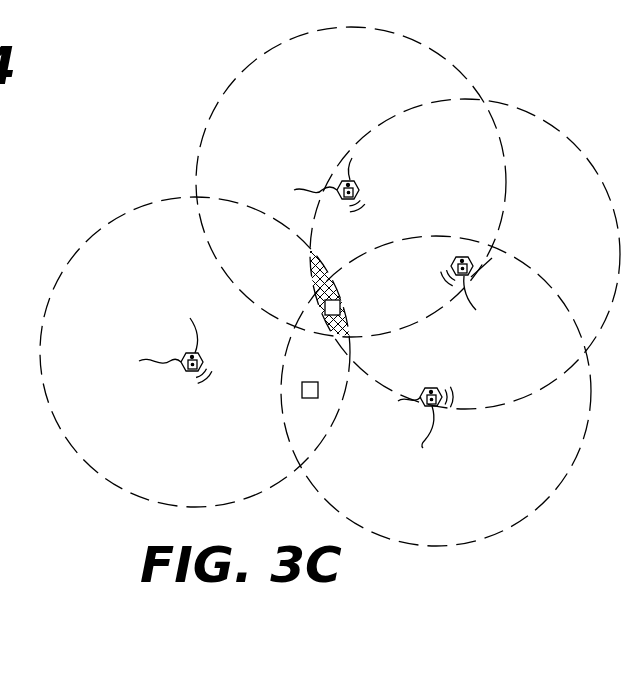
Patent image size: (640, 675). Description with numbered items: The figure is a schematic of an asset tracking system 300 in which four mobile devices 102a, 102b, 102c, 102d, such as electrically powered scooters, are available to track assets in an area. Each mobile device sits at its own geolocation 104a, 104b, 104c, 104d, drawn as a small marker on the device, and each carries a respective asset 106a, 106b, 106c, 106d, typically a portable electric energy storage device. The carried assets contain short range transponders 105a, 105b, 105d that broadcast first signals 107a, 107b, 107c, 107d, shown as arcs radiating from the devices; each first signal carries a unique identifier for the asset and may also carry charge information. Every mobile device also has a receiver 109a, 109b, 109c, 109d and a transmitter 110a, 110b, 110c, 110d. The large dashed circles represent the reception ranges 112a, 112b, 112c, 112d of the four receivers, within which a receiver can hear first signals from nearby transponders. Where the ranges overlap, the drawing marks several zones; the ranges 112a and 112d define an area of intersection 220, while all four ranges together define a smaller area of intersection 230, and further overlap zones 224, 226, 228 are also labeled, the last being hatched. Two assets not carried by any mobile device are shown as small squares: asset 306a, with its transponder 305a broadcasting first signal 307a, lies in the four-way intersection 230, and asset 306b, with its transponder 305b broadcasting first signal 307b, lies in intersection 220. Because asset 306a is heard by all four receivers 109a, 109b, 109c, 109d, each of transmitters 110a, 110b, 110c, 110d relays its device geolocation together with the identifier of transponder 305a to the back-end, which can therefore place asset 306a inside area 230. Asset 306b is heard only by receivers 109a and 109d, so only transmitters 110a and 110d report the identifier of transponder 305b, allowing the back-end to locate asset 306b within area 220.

The sensor network system 300 is at (160, 58).
The reception range of receiver 109a 112a is at (542, 505).
The reception range of receiver 109b 112b is at (600, 177).
The reception range of receiver 109c 112c is at (484, 102).
The reception range of receiver 109d 112d is at (80, 458).
The mobile device 102a is at (425, 389).
The mobile device 102b is at (456, 258).
The mobile device 102c is at (338, 182).
The mobile device 102d is at (182, 355).
The geolocation 104a is at (438, 389).
The geolocation 104b is at (468, 257).
The geolocation 104c is at (355, 180).
The geolocation 104d is at (198, 350).
The short range transponder 105a is at (360, 189).
The short range transponder 105b is at (475, 268).
The sensor 105d is at (204, 362).
The asset 106a is at (440, 405).
The asset 106b is at (471, 277).
The asset 106c is at (342, 199).
The asset 106d is at (185, 371).
The first signal 107a is at (455, 397).
The first signal 107b is at (446, 304).
The wireless signal 107c is at (368, 210).
The wireless signal 107d is at (203, 388).
The receiver 109a is at (384, 404).
The receiver 109b is at (509, 263).
The receiver 109c is at (291, 192).
The receiver 109d is at (135, 360).
The transmitter 110a is at (422, 441).
The transmitter 110b is at (497, 302).
The transmitter 110c is at (372, 138).
The transmitter 110d is at (203, 321).
The area of intersection 220 is at (332, 371).
The region 224 is at (485, 150).
The region 226 is at (263, 255).
The overlap region 228 is at (330, 262).
The area of intersection 230 is at (342, 327).
The short range transponder 305a is at (402, 258).
The asset 306a is at (340, 297).
The first signal 307a is at (402, 299).
The short range transponder 305b is at (241, 420).
The asset 306b is at (310, 398).
The first signal 307b is at (241, 462).